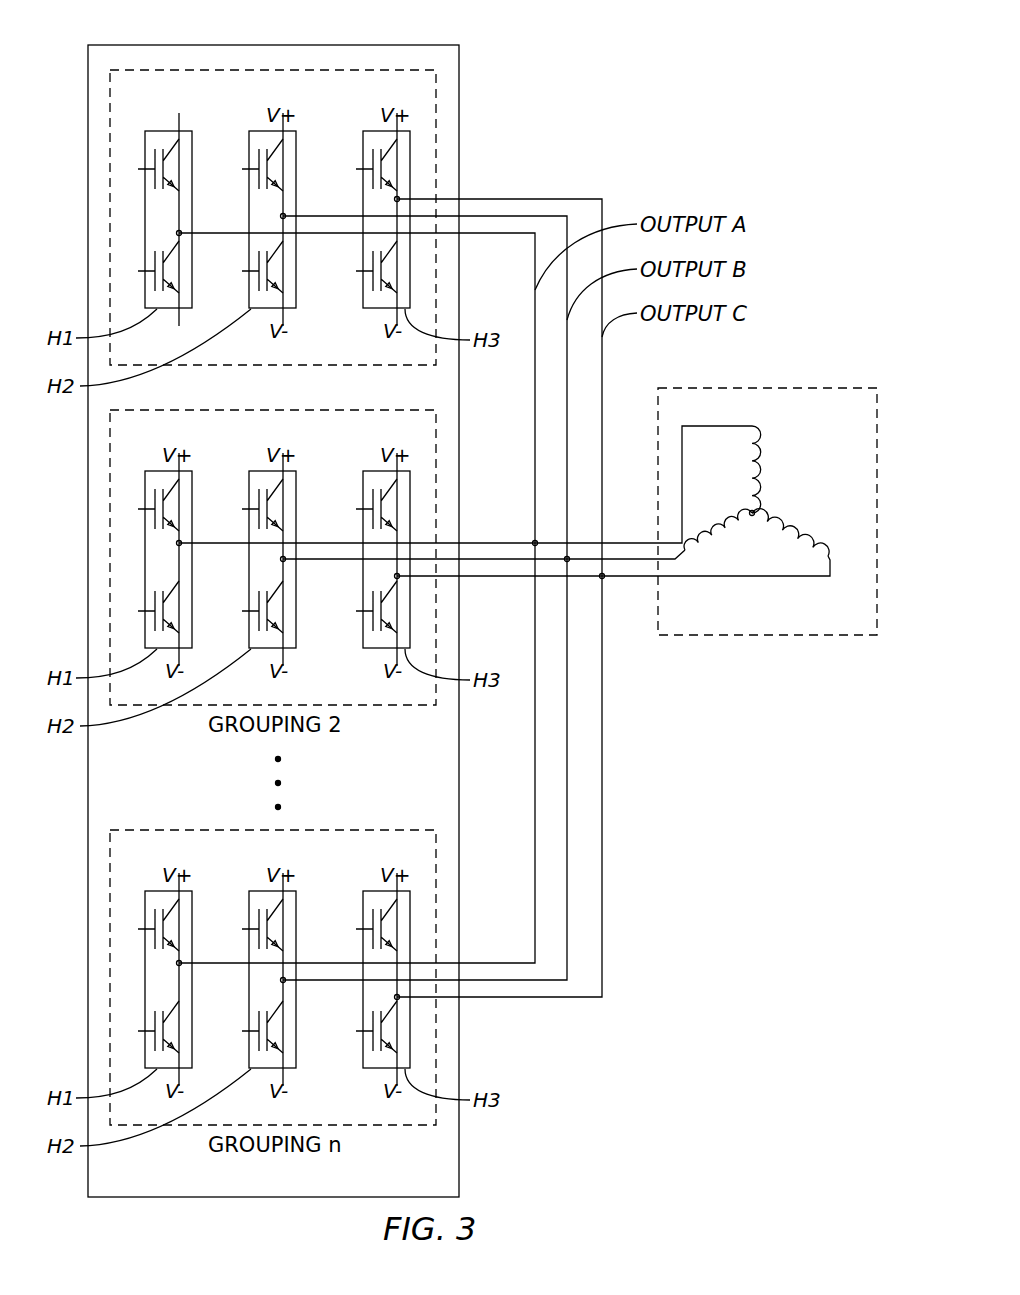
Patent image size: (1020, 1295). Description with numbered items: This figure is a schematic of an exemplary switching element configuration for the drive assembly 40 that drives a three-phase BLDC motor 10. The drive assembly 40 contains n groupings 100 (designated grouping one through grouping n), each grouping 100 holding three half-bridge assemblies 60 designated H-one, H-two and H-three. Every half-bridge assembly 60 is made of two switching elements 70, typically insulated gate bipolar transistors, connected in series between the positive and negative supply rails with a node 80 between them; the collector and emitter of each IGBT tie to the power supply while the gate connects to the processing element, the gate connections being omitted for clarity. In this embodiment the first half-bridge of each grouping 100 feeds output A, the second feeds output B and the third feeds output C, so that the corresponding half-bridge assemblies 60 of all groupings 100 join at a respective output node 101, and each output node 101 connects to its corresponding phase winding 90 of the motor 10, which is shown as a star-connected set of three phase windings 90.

The BLDC motor 10 is at (764, 388).
The drive assembly 40 is at (413, 45).
The half-bridge assembly 60 is at (118, 174).
The switching element 70 is at (138, 142).
The node 80 is at (176, 233).
The phase winding 90 is at (764, 468).
The grouping 100 is at (326, 70).
The output node 101 is at (534, 541).